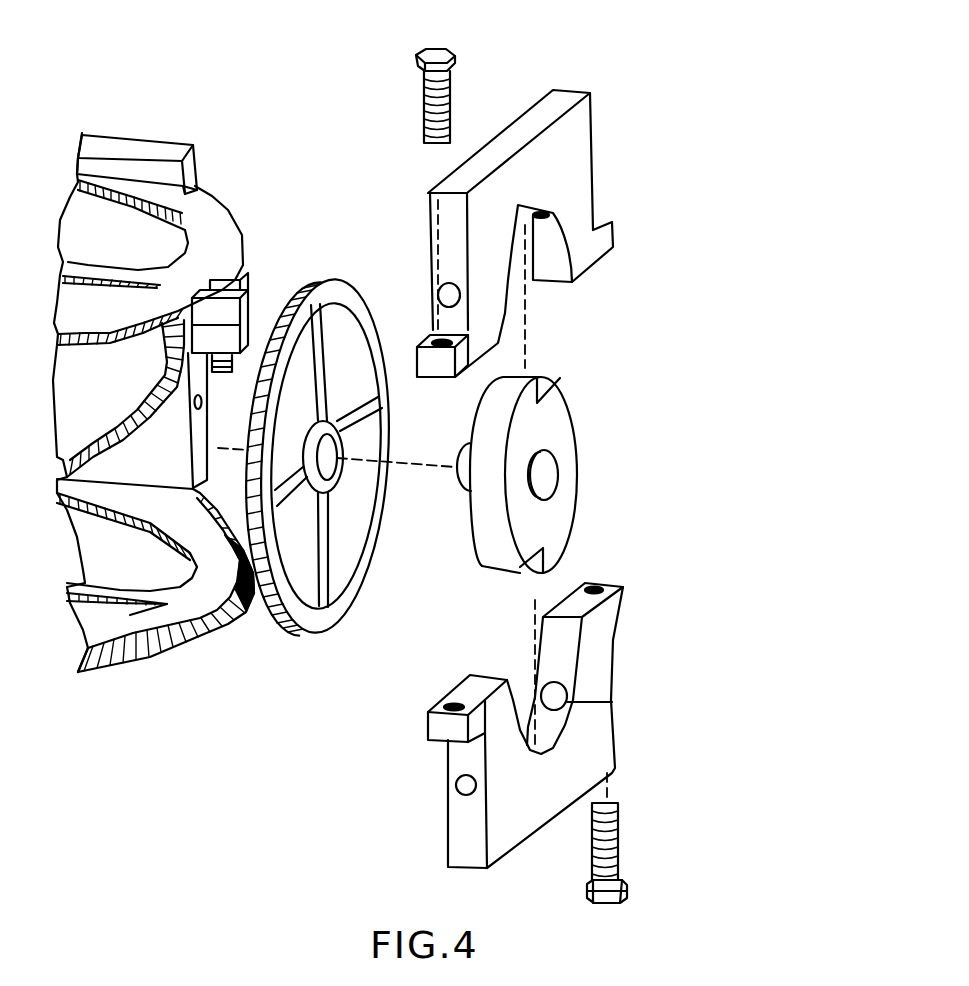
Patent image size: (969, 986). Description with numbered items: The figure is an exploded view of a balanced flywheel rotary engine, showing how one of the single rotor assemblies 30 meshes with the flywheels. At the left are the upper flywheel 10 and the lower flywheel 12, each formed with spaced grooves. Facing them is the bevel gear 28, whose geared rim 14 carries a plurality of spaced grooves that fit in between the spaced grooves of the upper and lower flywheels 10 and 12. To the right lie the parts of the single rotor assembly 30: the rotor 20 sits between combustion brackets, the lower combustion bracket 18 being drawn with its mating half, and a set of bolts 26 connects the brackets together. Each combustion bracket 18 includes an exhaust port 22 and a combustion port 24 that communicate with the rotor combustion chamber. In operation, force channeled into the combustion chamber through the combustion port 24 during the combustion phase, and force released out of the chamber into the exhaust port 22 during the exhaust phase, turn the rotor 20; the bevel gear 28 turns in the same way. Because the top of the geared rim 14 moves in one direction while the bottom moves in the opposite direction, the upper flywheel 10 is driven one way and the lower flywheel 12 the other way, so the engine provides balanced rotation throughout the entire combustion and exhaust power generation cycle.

The upper flywheel 10 is at (226, 215).
The lower flywheel 12 is at (200, 640).
The geared rim 14 is at (346, 290).
The lower combustion bracket 18 is at (582, 162).
The rotor 20 is at (555, 413).
The exhaust port 22 is at (462, 290).
The combustion port 24 is at (460, 785).
The bolts 26 is at (437, 47).
The bevel gear 28 is at (328, 632).
The single rotor assembly 30 is at (130, 140).